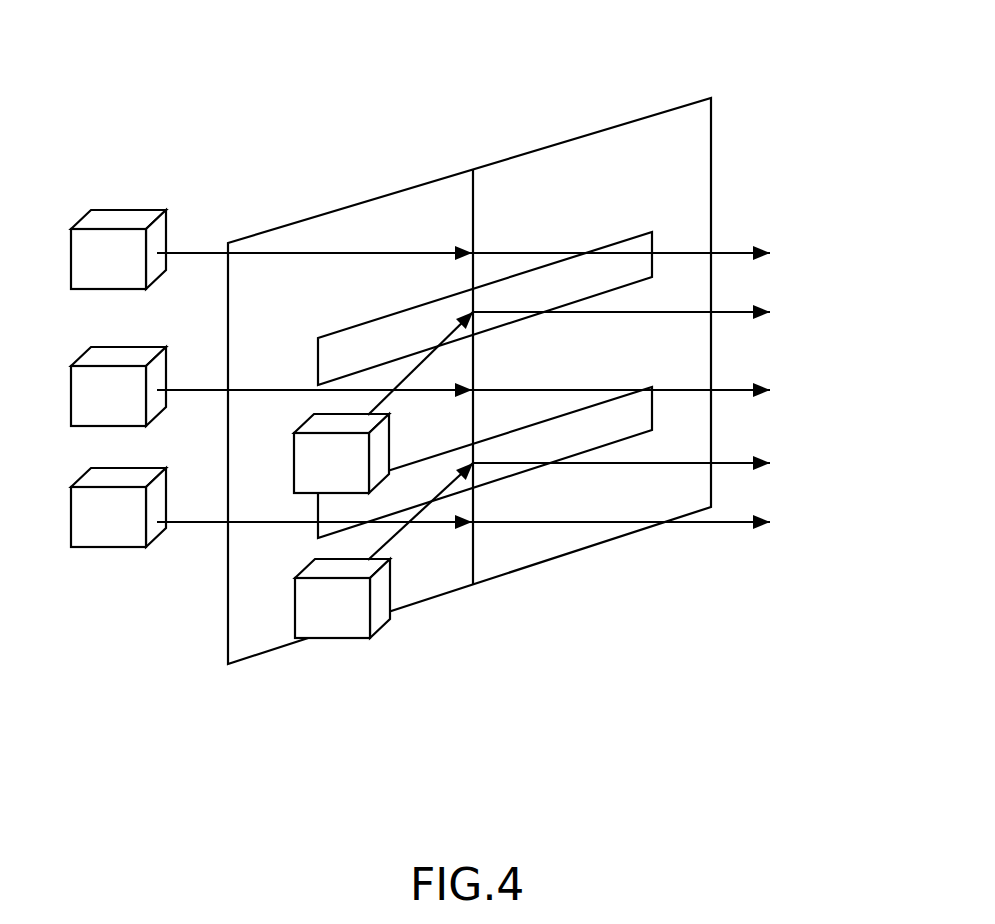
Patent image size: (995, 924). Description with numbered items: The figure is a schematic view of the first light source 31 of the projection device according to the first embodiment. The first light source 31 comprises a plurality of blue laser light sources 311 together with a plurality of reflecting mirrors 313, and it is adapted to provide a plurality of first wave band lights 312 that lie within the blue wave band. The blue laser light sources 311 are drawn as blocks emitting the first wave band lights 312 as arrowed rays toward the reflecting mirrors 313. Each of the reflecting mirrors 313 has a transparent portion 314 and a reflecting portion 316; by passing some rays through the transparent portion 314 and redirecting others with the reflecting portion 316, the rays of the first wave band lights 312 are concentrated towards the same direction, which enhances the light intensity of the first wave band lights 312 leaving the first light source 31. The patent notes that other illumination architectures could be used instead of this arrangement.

The first light source 31 is at (590, 43).
The blue laser light source 311 is at (113, 222).
The first wave band light 312 is at (193, 525).
The reflecting mirror 313 is at (577, 165).
The transparent portion 314 is at (475, 525).
The reflecting portion 316 is at (475, 463).